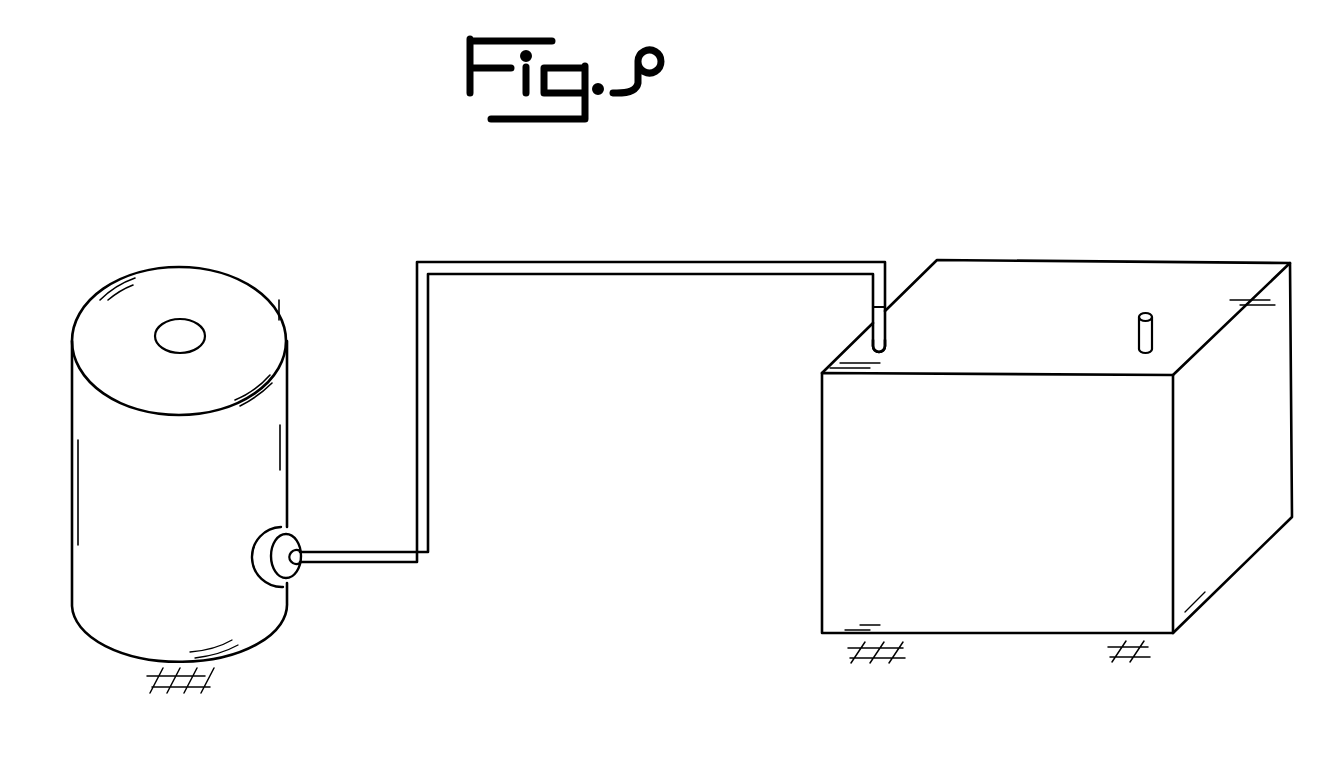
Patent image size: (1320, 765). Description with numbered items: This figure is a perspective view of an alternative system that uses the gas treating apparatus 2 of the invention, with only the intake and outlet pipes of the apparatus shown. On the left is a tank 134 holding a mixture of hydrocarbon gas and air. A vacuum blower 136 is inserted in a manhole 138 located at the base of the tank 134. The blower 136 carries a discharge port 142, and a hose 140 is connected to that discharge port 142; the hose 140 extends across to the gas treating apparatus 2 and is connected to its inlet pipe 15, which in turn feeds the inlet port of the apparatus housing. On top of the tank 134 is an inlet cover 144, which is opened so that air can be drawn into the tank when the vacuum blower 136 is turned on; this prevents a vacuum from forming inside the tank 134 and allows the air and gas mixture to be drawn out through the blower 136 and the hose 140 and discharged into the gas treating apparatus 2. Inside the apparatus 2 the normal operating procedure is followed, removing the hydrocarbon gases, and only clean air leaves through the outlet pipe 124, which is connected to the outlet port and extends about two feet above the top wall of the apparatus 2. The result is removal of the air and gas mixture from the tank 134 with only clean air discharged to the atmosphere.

The gas treating apparatus 2 is at (1137, 243).
The intake pipe 15 is at (880, 340).
The outlet pipe 124 is at (1153, 333).
The tank 134 is at (258, 424).
The vacuum blower 136 is at (297, 548).
The manhole 138 is at (273, 571).
The hose 140 is at (428, 437).
The discharge port 142 is at (301, 556).
The inlet cover 144 is at (186, 327).